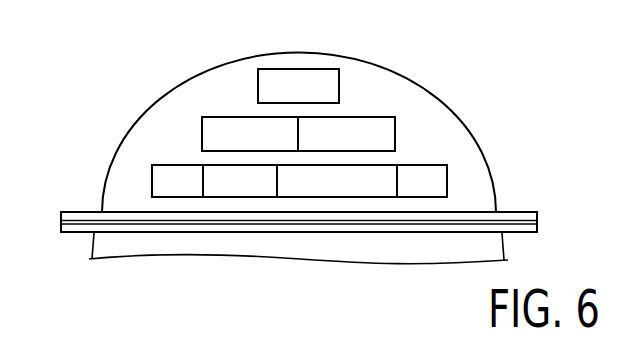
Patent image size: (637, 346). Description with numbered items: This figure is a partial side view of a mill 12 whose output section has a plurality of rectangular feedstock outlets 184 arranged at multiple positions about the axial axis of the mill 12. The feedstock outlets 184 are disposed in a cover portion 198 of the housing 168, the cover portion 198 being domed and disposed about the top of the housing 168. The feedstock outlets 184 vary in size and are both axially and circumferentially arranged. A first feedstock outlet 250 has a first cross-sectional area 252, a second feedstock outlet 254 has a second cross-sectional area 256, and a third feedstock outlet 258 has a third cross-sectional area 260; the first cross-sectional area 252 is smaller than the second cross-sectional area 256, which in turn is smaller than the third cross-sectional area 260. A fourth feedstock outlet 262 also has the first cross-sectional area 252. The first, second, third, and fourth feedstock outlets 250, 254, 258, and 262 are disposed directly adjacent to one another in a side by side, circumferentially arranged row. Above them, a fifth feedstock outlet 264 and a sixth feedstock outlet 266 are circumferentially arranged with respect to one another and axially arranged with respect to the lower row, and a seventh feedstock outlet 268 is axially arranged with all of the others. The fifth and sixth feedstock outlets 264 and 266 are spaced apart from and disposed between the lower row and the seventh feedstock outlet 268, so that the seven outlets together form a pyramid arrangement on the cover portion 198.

The mill 12 is at (101, 71).
The cover portion 198 is at (427, 101).
The housing 168 is at (487, 176).
The feedstock outlets 184 is at (225, 117).
The fifth feedstock outlet 264 is at (202, 133).
The sixth feedstock outlet 266 is at (396, 132).
The seventh feedstock outlet 268 is at (318, 69).
The first feedstock outlet 250 is at (178, 197).
The first cross-sectional area 252 is at (199, 193).
The second feedstock outlet 254 is at (240, 197).
The second cross-sectional area 256 is at (261, 193).
The third feedstock outlet 258 is at (333, 197).
The third cross-sectional area 260 is at (358, 193).
The fourth feedstock outlet 262 is at (420, 197).